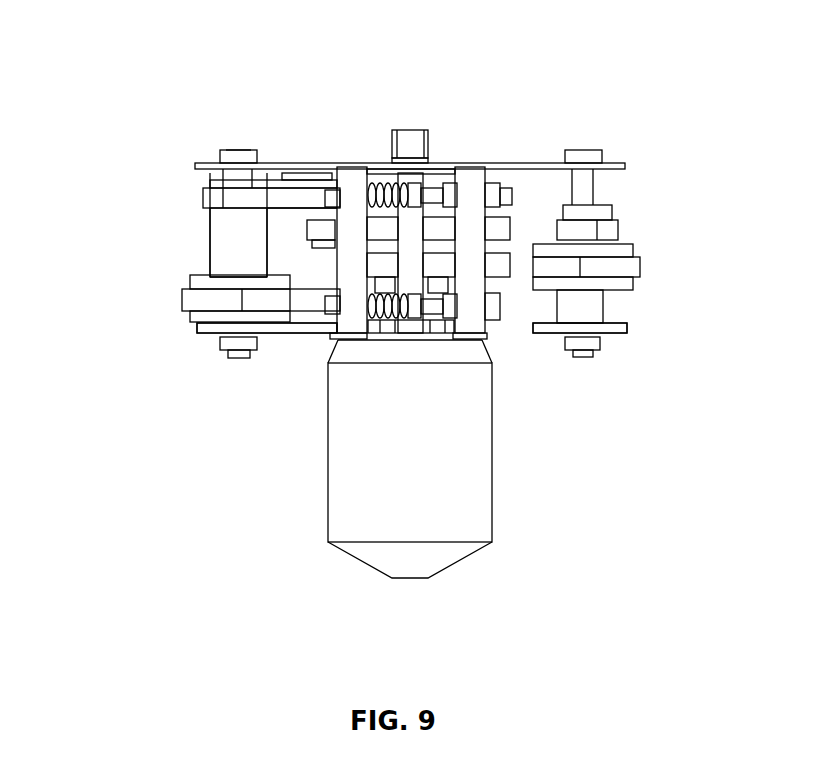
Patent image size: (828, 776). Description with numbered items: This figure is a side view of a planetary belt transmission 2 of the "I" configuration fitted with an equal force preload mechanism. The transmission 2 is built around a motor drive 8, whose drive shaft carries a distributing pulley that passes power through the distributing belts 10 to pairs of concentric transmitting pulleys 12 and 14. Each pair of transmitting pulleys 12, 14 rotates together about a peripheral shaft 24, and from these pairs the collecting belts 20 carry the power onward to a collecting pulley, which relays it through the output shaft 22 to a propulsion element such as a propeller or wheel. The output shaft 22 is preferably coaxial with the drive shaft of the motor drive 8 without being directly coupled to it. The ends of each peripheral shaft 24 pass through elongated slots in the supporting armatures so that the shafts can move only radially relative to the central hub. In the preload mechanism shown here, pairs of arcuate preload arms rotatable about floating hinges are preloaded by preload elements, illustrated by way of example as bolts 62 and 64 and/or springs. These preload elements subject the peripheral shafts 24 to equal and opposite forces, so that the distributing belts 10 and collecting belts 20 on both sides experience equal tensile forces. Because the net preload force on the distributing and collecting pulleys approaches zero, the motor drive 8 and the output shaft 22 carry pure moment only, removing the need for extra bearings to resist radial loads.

The planetary belt transmission 2 is at (405, 80).
The motor drive 8 is at (388, 462).
The distributing belts 10 is at (283, 297).
The transmitting pulley 12 is at (208, 283).
The transmitting pulley 14 is at (228, 252).
The collecting belts 20 is at (240, 197).
The output shaft 22 is at (410, 142).
The peripheral shaft 24 is at (235, 150).
The bolt 62 is at (433, 305).
The bolt 64 is at (432, 197).